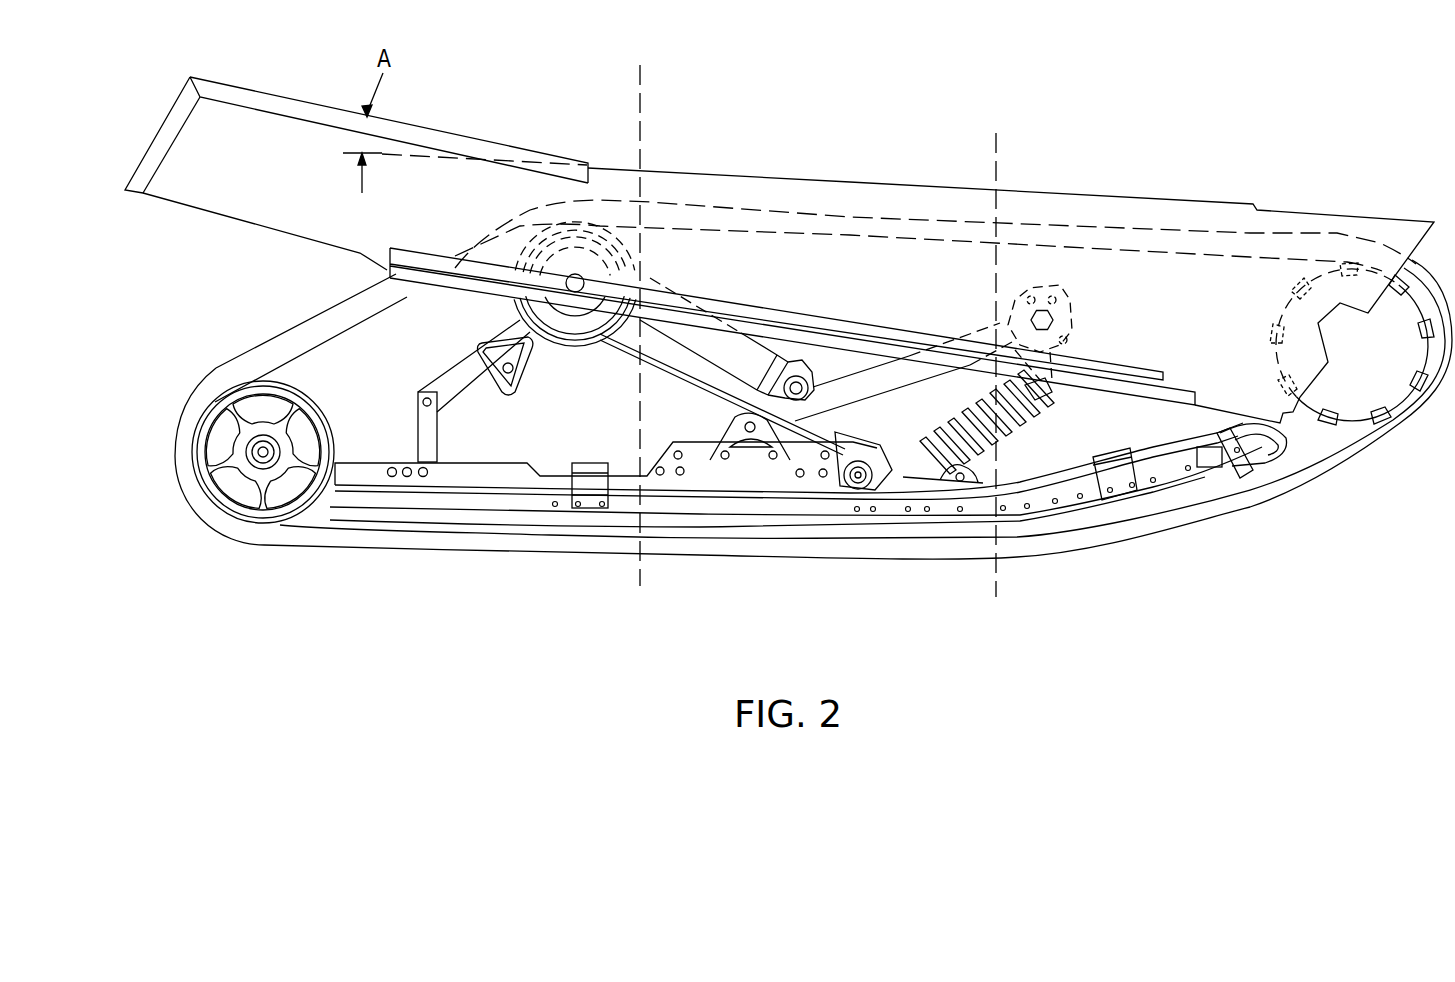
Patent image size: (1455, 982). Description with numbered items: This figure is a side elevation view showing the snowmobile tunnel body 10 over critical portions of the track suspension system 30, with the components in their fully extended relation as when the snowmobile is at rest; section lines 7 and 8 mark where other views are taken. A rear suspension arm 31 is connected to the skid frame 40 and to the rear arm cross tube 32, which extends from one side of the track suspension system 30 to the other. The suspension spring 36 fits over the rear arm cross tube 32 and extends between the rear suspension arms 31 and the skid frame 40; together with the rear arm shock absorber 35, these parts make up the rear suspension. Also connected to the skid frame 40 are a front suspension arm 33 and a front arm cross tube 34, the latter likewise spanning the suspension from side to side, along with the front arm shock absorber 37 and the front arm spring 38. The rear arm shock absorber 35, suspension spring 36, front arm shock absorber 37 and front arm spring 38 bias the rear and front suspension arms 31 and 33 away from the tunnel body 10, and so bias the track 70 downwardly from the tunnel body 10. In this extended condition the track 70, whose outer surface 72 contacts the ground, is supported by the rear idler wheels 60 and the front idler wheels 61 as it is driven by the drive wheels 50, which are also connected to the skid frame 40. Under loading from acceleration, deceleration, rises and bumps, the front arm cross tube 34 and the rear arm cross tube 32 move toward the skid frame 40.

The section line 7- 7 is at (1030, 597).
The section line 8- 8 is at (606, 587).
The tunnel body 10 is at (838, 108).
The track suspension system 30 is at (810, 575).
The rear suspension arm 31 is at (460, 363).
The rear arm cross tube 32 is at (565, 275).
The front suspension arm 33 is at (877, 395).
The front arm cross tube 34 is at (1055, 320).
The rear arm shock absorber 35 is at (743, 336).
The suspension spring 36 is at (721, 394).
The front arm shock absorber 37 is at (1037, 401).
The front arm spring 38 is at (1007, 418).
The skid frame 40 is at (500, 498).
The drive wheel 50 is at (1357, 407).
The rear idler wheel 60 is at (303, 387).
The front idler wheel 61 is at (593, 344).
The track 70 is at (270, 355).
The outer surface of the track 72 is at (317, 317).